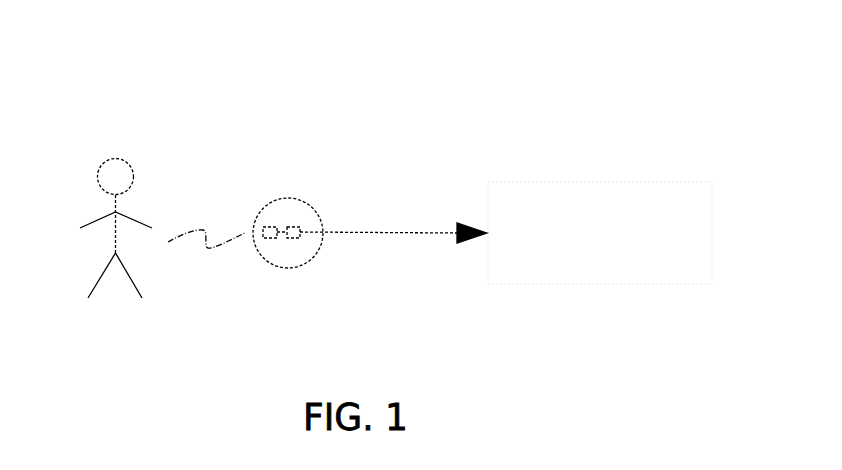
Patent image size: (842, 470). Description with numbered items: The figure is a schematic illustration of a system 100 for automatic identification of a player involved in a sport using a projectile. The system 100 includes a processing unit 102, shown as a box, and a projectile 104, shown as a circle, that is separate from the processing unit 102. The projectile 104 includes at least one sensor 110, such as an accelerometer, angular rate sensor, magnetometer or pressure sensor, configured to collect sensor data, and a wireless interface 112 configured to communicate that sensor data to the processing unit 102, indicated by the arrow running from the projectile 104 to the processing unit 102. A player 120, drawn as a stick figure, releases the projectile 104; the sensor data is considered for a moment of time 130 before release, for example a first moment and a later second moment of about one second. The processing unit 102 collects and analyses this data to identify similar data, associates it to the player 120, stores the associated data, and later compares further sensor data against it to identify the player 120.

The system 100 is at (520, 71).
The processing unit 102 is at (558, 182).
The projectile 104 is at (307, 198).
The sensor 110 is at (272, 238).
The wireless interface 112 is at (303, 236).
The player 120 is at (120, 152).
The moment of time 130 is at (202, 223).